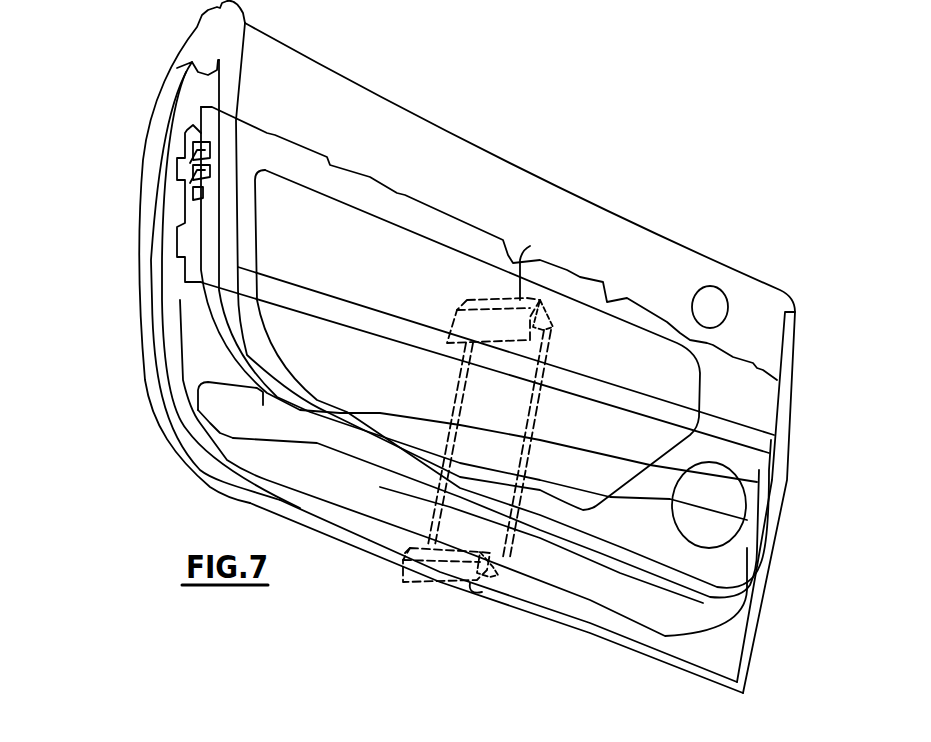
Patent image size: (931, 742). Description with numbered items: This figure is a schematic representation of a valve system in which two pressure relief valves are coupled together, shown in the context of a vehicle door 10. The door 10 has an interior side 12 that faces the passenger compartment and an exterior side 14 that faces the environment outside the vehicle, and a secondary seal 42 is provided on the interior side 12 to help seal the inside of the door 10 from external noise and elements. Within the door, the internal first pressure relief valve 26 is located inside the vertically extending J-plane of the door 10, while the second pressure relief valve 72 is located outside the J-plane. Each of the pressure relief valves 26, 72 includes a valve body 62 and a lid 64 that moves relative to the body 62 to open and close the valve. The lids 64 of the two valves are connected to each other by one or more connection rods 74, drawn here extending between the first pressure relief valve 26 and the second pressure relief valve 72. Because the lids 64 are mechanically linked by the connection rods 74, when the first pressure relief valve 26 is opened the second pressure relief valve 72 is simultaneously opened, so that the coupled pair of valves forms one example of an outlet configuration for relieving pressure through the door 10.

The door 10 is at (600, 105).
The interior side 12 is at (752, 413).
The exterior side 14 is at (146, 148).
The first pressure relief valve 26 is at (530, 246).
The secondary seal 42 is at (777, 557).
The valve body 62 is at (463, 327).
The lid 64 is at (557, 327).
The second pressure relief valve 72 is at (413, 550).
The connection rod 74 is at (455, 403).